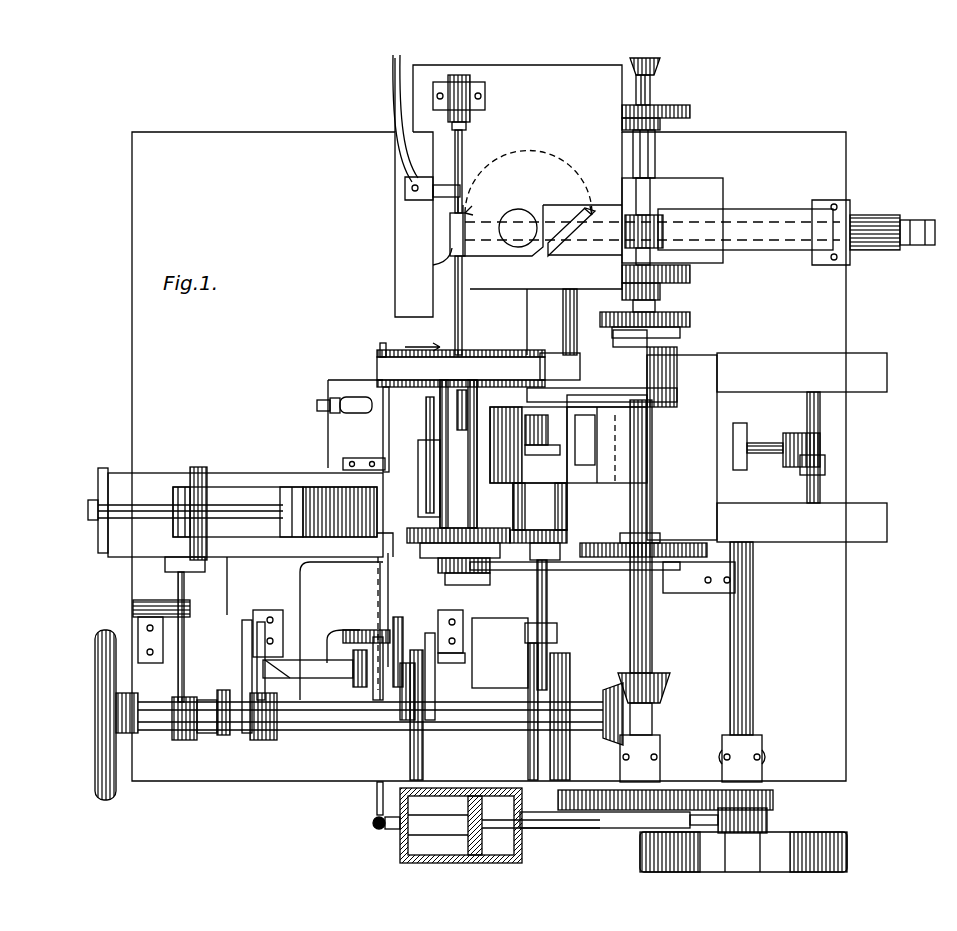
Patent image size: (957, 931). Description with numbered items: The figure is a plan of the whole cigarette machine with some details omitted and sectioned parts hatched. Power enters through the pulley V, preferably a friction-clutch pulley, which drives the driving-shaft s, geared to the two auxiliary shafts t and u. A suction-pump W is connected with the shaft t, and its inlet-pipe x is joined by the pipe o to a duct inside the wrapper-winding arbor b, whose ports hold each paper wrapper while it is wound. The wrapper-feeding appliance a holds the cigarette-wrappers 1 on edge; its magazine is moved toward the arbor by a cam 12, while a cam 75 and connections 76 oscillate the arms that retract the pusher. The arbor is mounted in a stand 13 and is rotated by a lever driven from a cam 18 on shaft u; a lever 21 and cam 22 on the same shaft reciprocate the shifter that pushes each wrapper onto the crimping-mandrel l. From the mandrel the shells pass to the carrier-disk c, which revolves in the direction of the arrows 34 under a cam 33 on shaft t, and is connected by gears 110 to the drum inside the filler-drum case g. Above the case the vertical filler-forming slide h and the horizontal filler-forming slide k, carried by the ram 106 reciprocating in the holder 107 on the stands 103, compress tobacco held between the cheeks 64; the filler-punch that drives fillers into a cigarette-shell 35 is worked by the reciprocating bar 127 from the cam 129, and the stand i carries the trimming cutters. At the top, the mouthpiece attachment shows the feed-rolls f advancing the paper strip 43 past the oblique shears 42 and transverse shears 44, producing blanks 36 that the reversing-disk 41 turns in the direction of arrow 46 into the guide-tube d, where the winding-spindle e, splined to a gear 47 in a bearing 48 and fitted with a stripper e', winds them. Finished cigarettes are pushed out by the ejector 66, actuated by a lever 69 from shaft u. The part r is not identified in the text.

The bearing 48 is at (472, 92).
The gear 47 is at (468, 125).
The winding-spindle e is at (471, 171).
The stripper e' is at (450, 195).
The arrow 46 is at (528, 180).
The reversing-disk 41 is at (519, 208).
The transverse shears 44 is at (547, 214).
The oblique shears 42 is at (592, 220).
The paper strip 43 is at (757, 222).
The feed-rolls f is at (655, 218).
The blanks 36 is at (485, 247).
The guide-tube d is at (463, 318).
The stand for cigarette-trimming cutters i is at (558, 322).
The arrows 34 is at (421, 336).
The cigarette-shell 35 is at (378, 350).
The carrier-disk c is at (431, 520).
The pin r is at (467, 406).
The crimping-mandrel l is at (441, 454).
The ejector 66 is at (427, 470).
The wrapper-winding arbor b is at (428, 500).
The gears 110 is at (488, 530).
The filler-drum case g is at (528, 483).
The reciprocating bar 127 is at (537, 600).
The vertical filler-forming slide h is at (590, 467).
The horizontal filler-forming slide k is at (602, 467).
The cheeks 64 is at (597, 412).
The stands 103 is at (802, 447).
The holder 107 is at (682, 447).
The ram 106 is at (738, 470).
The driving-shaft s is at (755, 690).
The auxiliary shaft t is at (630, 642).
The cam 33 is at (615, 558).
The wrapper-feeding appliance a is at (235, 530).
The cigarette-wrappers 1 is at (358, 513).
The stand 13 is at (346, 616).
The connections 76 is at (185, 584).
The auxiliary shaft u is at (380, 701).
The cam 75 is at (187, 740).
The cam 12 is at (223, 737).
The cam 18 is at (263, 742).
The suction-pipe o is at (378, 685).
The cam 22 is at (410, 763).
The lever 21 is at (400, 710).
The lever 69 is at (432, 684).
The inlet-pipe x is at (372, 797).
The suction-pump W is at (400, 850).
The cam 129 is at (646, 811).
The pulley V is at (743, 841).